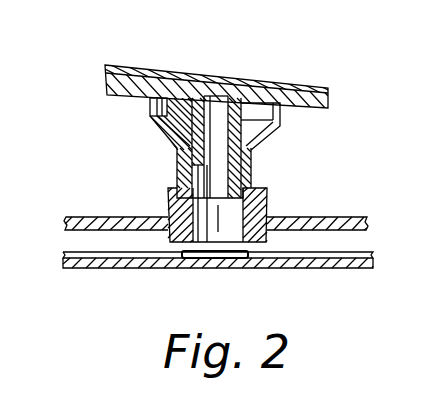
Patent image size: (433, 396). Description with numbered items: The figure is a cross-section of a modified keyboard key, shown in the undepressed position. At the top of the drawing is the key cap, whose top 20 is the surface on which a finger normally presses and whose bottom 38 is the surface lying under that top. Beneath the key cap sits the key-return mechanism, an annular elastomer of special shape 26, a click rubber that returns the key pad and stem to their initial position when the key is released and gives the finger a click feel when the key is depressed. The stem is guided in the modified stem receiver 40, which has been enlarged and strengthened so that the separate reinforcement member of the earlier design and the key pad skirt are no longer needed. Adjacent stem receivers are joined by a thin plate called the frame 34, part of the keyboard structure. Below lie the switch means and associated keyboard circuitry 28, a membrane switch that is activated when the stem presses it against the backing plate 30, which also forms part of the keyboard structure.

The top of the key cap 20 is at (302, 86).
The annular elastomer 26 is at (163, 132).
The switch means and associated keyboard circuitry 28 is at (70, 252).
The backing plate 30 is at (72, 268).
The frame 34 is at (70, 217).
The bottom of the key cap 38 is at (300, 105).
The modified stem receiver 40 is at (268, 205).